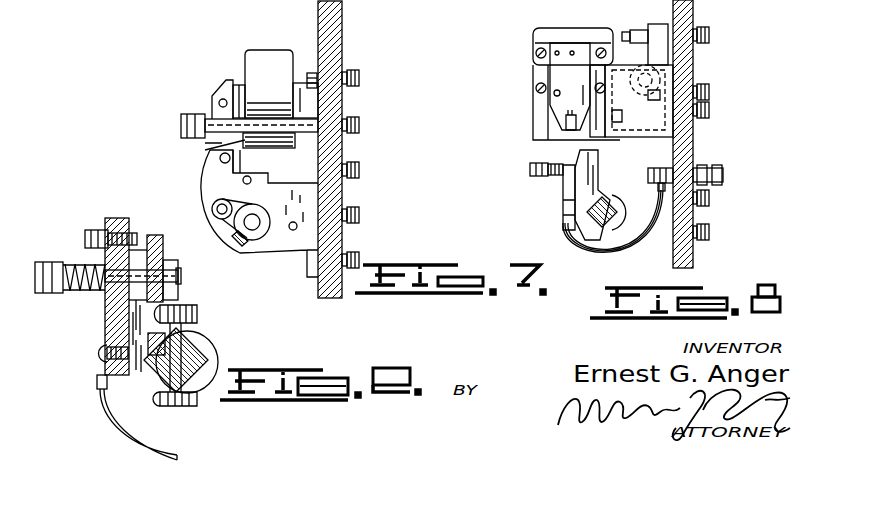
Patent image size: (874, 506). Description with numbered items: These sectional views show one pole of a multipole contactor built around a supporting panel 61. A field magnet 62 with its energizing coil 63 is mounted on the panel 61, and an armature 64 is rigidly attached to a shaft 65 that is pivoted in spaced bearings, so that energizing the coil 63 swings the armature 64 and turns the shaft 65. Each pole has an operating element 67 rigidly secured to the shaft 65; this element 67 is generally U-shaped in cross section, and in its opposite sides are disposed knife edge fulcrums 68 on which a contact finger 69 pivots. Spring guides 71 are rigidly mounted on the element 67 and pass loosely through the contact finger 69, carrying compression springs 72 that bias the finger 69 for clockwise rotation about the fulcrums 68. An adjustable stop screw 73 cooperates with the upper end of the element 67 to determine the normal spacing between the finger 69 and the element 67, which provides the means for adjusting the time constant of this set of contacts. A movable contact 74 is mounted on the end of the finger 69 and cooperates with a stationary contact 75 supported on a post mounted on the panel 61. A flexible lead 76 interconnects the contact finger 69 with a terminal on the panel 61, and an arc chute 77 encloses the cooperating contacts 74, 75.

In FIG. 7, the supporting panel 61 is at (333, 44).
In FIG. 8, the supporting panel 61 is at (694, 146).
In FIG. 7, the field magnet 62 is at (300, 83).
In FIG. 7, the energizing coil 63 is at (266, 60).
In FIG. 7, the armature 64 is at (213, 182).
In FIG. 9, the shaft 65 is at (217, 338).
In FIG. 8, the shaft 65 is at (612, 222).
In FIG. 9, the operating element 67 is at (180, 290).
In FIG. 9, the knife edge fulcrum 68 is at (187, 327).
In FIG. 9, the contact finger 69 is at (103, 316).
In FIG. 9, the spring guide 71 is at (173, 268).
In FIG. 9, the compression spring 72 is at (80, 258).
In FIG. 9, the adjustable stop screw 73 is at (130, 228).
In FIG. 8, the movable contact 74 is at (570, 86).
In FIG. 8, the stationary contact 75 is at (612, 143).
In FIG. 9, the flexible lead 76 is at (123, 435).
In FIG. 8, the flexible lead 76 is at (585, 257).
In FIG. 8, the arc chute 77 is at (560, 34).